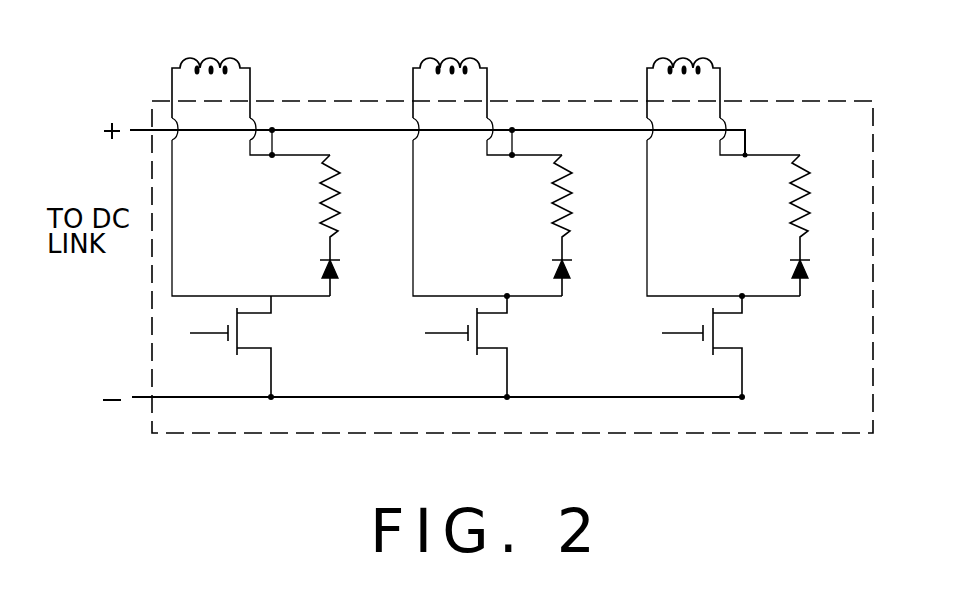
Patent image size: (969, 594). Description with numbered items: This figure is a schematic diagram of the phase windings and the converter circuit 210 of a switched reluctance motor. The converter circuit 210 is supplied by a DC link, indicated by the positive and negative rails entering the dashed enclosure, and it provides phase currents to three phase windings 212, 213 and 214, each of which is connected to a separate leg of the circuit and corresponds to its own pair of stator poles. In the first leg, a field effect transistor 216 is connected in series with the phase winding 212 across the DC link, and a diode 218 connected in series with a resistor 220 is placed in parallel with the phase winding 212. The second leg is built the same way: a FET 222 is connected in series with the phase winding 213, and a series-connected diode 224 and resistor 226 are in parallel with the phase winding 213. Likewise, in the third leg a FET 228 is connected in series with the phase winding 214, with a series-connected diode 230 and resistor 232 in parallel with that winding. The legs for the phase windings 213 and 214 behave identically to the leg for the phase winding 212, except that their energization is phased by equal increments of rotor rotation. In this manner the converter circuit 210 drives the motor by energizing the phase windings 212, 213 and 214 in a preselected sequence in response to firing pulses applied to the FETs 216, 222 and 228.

The converter circuit 210 is at (432, 434).
The phase winding 212 is at (196, 60).
The phase winding 213 is at (432, 60).
The phase winding 214 is at (663, 60).
The field effect transistor 216 is at (243, 357).
The diode 218 is at (341, 265).
The resistor 220 is at (350, 202).
The field effect transistor 222 is at (482, 357).
The diode 224 is at (573, 267).
The resistor 226 is at (582, 204).
The field effect transistor 228 is at (717, 357).
The diode 230 is at (811, 267).
The resistor 232 is at (812, 186).